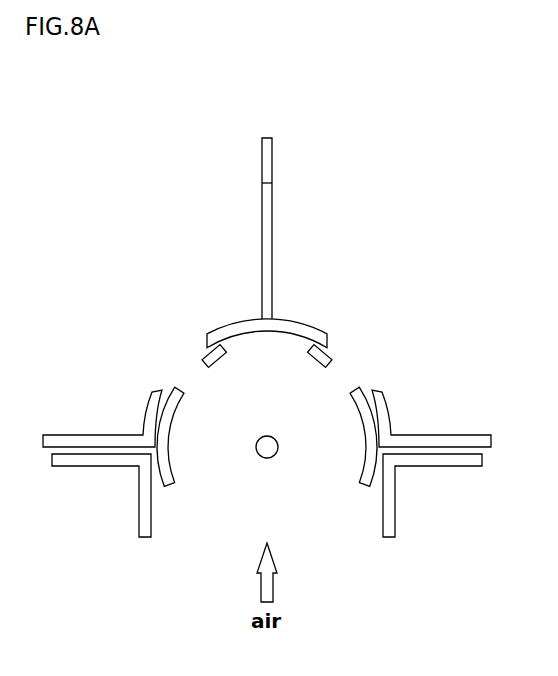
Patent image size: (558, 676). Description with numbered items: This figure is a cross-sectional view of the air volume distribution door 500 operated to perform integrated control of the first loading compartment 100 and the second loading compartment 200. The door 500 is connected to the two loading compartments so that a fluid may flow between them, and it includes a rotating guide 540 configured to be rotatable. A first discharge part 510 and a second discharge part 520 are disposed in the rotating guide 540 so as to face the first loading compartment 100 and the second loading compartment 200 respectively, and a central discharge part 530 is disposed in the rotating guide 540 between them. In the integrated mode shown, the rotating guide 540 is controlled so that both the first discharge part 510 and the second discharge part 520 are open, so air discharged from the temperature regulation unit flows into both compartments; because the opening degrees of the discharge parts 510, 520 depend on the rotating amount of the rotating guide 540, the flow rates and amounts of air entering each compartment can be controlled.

The first loading compartment 100 is at (183, 227).
The second loading compartment 200 is at (346, 227).
The air volume distribution door 500 is at (245, 108).
The first discharge part 510 is at (186, 372).
The second discharge part 520 is at (348, 370).
The central discharge part 530 is at (260, 343).
The rotating guide 540 is at (381, 419).